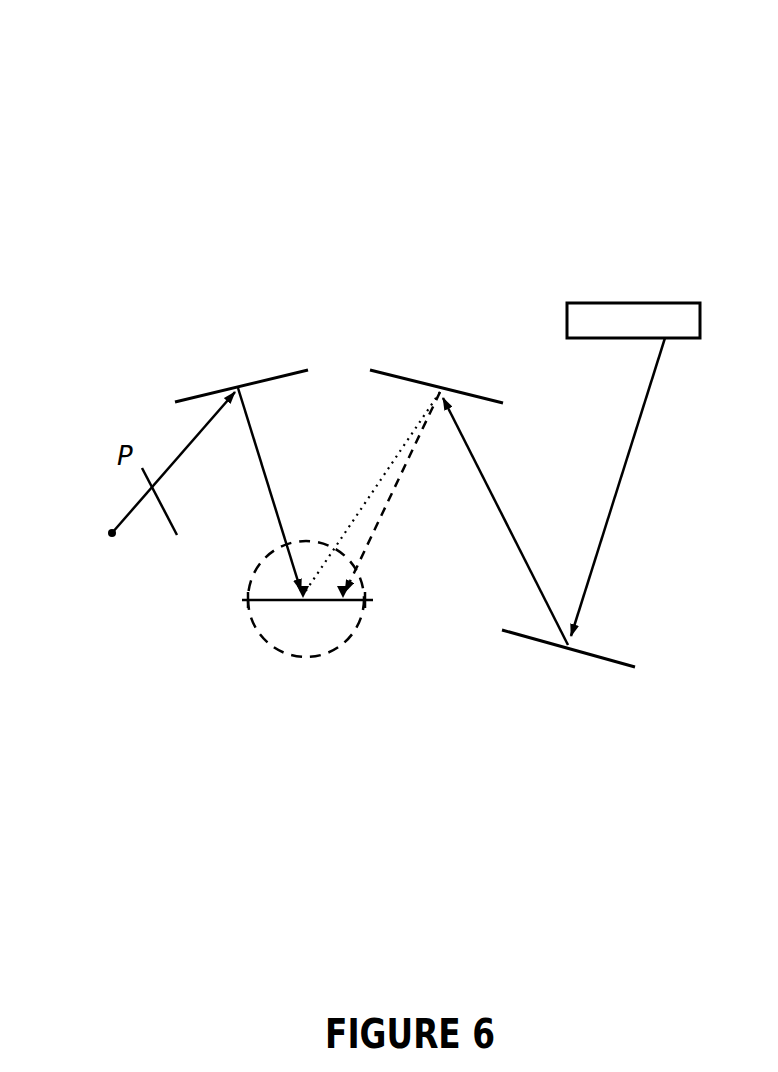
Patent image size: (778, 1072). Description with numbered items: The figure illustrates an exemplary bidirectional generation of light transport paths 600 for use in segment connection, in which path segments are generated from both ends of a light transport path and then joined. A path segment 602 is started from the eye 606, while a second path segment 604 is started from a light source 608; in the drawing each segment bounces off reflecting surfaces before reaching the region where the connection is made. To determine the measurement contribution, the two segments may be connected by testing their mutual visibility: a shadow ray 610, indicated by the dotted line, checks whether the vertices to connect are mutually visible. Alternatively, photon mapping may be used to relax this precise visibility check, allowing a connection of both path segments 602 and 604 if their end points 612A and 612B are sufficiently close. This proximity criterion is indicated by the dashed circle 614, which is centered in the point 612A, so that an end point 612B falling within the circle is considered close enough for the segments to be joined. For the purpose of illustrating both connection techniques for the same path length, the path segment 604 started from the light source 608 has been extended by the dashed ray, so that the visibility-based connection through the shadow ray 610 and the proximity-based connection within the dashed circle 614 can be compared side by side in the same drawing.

The bidirectional generation of light transport paths 600 is at (645, 108).
The path segment started from the eye 602 is at (177, 458).
The path segment started from the light source 604 is at (632, 443).
The eye 606 is at (108, 535).
The light source 608 is at (618, 302).
The shadow ray 610 is at (402, 462).
The vertex to connect 612A is at (300, 598).
The end point of path segment 612B is at (358, 578).
The dashed circle 614 is at (323, 652).